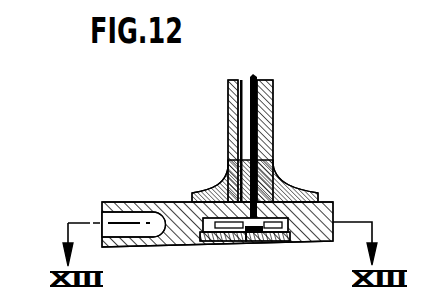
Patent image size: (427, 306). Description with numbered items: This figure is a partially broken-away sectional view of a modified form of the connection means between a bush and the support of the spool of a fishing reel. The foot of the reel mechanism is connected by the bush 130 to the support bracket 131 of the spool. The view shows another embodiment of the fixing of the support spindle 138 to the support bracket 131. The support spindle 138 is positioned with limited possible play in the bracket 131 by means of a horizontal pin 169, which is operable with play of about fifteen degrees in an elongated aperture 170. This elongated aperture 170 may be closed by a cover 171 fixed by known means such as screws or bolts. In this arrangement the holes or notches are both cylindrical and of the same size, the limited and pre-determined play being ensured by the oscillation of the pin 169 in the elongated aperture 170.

The bush 130 is at (272, 110).
The support bracket 131 is at (333, 203).
The support spindle 138 is at (249, 120).
The horizontal pin 169 is at (228, 238).
The elongated aperture 170 is at (213, 241).
The cover 171 is at (284, 241).